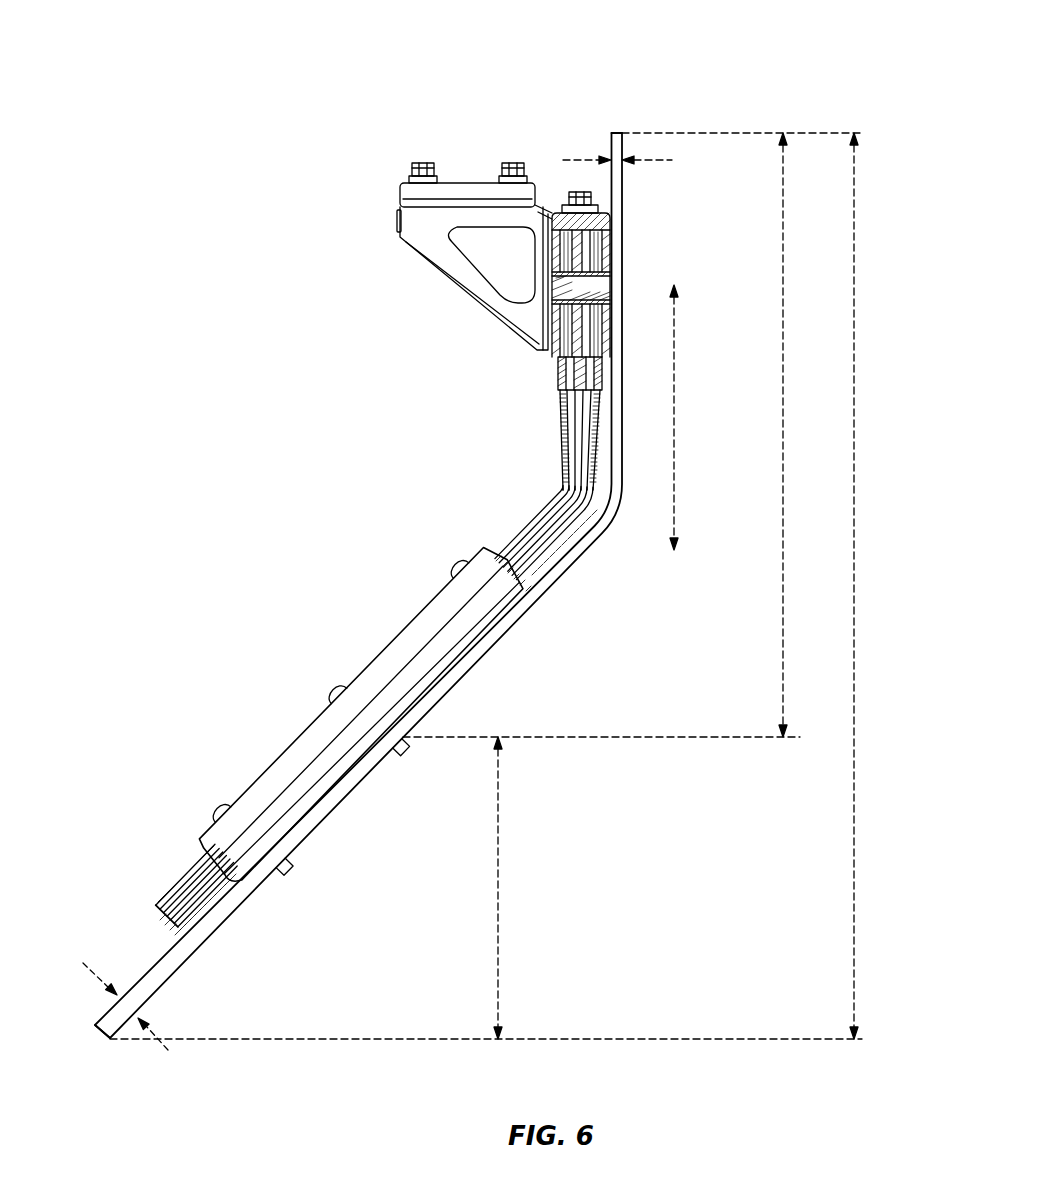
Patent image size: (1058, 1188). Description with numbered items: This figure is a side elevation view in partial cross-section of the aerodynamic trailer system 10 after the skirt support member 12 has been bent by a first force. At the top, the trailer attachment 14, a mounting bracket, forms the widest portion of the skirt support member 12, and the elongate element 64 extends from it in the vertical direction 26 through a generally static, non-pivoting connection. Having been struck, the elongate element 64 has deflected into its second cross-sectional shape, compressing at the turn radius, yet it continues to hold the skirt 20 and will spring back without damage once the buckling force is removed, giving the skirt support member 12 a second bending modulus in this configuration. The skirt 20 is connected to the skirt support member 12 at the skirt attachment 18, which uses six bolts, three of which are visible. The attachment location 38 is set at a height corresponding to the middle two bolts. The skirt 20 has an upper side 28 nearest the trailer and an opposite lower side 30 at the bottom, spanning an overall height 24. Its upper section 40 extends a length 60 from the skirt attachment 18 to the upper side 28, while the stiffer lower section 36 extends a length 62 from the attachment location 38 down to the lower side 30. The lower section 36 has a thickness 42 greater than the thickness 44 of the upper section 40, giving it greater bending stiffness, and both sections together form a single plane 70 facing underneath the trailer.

The aerodynamic trailer system 10 is at (747, 70).
The skirt support member 12 is at (560, 372).
The trailer attachment 14 is at (478, 215).
The skirt attachment 18 is at (298, 748).
The skirt 20 is at (622, 212).
The height 24 is at (855, 585).
The vertical direction 26 is at (674, 412).
The upper side 28 is at (615, 128).
The lower side 30 is at (93, 1034).
The lower section 36 is at (172, 950).
The attachment location 38 is at (320, 810).
The upper section 40 is at (612, 256).
The thickness 42 is at (156, 1027).
The thickness 44 is at (598, 160).
The length 60 is at (784, 437).
The length 62 is at (498, 893).
The elongate element 64 is at (578, 430).
The single plane 70 is at (132, 968).